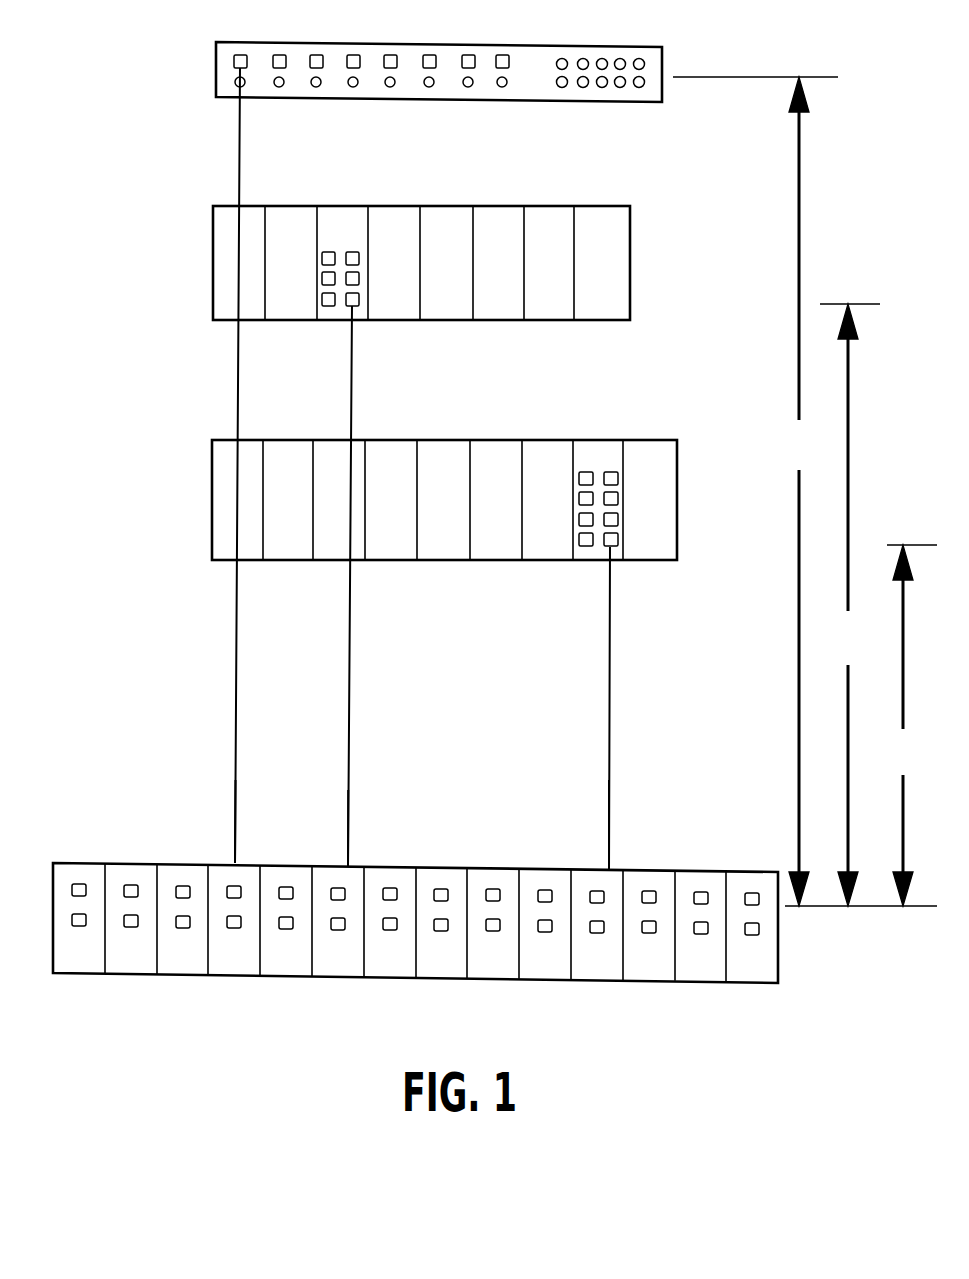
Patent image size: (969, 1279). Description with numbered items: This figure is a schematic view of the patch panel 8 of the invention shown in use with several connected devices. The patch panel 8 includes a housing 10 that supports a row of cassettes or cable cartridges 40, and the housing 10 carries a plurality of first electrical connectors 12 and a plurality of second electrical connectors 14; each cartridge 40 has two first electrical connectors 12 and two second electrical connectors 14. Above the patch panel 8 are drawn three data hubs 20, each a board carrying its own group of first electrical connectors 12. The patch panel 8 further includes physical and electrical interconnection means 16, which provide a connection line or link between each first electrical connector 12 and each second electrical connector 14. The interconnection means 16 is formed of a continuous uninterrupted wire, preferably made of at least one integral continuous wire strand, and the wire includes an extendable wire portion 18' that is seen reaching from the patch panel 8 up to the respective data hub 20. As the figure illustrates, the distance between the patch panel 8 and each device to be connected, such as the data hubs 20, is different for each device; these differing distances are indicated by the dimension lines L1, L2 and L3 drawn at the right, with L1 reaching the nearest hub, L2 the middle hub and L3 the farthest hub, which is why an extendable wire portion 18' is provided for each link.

The patch panel 8 is at (88, 848).
The housing 10 is at (134, 983).
The first electrical connector 12 is at (240, 53).
The second electrical connector 14 is at (78, 927).
The interconnection means 16 is at (230, 651).
The extendable wire portion 18' is at (384, 807).
The data hub 20 is at (215, 84).
The cable cartridge 40 is at (223, 967).
The distance L1 is at (904, 725).
The distance L2 is at (848, 605).
The distance L3 is at (799, 491).